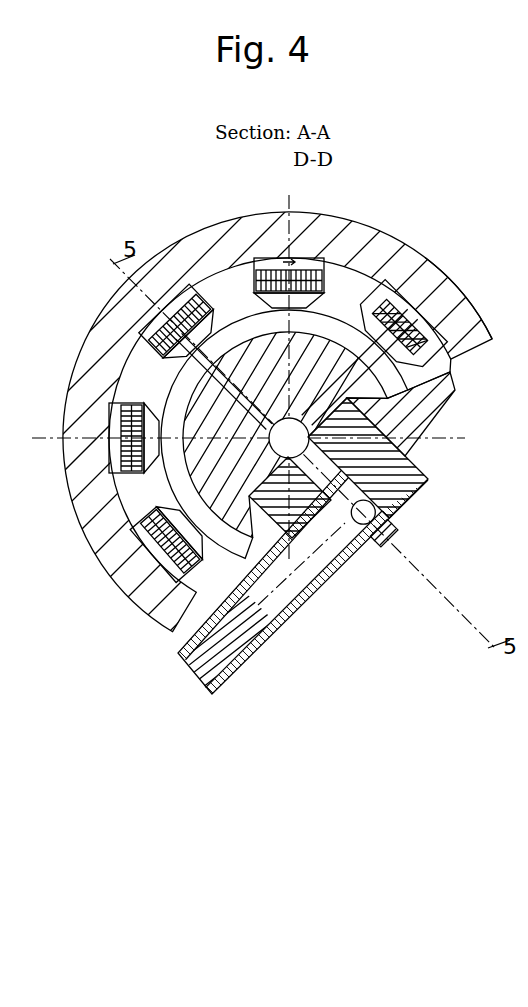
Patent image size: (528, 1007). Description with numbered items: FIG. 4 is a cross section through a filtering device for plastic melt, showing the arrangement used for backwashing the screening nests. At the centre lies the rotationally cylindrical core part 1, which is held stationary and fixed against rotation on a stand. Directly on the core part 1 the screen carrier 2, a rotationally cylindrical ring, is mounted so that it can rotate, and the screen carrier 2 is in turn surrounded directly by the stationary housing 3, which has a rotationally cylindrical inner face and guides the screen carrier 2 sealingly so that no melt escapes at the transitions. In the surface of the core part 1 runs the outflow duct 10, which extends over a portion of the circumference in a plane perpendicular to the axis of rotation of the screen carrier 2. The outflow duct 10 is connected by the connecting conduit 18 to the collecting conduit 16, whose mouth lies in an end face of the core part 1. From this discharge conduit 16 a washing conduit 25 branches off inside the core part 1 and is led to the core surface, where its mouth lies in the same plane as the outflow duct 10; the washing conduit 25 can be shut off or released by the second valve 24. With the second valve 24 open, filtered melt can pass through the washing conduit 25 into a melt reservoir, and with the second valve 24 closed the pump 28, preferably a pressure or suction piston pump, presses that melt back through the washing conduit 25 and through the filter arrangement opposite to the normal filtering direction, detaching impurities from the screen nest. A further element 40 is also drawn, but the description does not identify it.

The core part 1 is at (229, 540).
The screen carrier 2 is at (443, 380).
The housing 3 is at (440, 290).
The outflow duct 10 is at (237, 323).
The collecting conduit 16 is at (137, 300).
The connecting conduit 18 is at (372, 295).
The second valve 24 is at (383, 421).
The washing conduit 25 is at (395, 463).
The pump 28 is at (318, 604).
The screw 40 is at (336, 547).